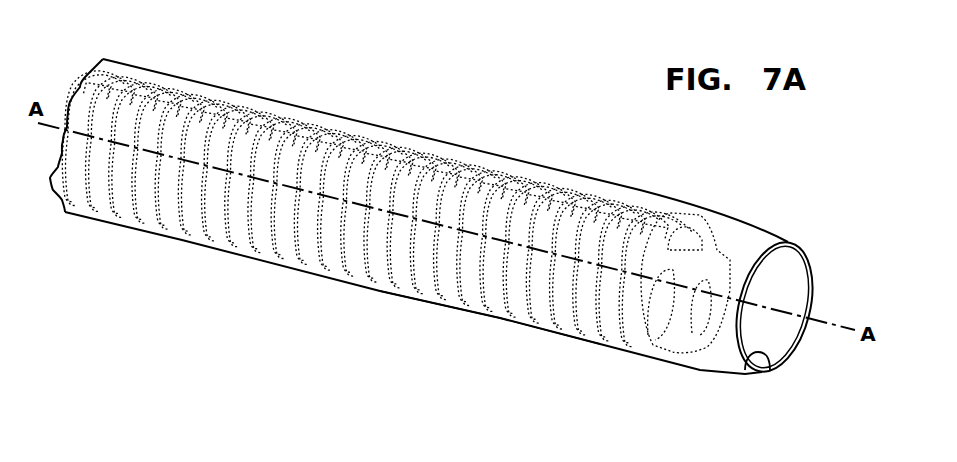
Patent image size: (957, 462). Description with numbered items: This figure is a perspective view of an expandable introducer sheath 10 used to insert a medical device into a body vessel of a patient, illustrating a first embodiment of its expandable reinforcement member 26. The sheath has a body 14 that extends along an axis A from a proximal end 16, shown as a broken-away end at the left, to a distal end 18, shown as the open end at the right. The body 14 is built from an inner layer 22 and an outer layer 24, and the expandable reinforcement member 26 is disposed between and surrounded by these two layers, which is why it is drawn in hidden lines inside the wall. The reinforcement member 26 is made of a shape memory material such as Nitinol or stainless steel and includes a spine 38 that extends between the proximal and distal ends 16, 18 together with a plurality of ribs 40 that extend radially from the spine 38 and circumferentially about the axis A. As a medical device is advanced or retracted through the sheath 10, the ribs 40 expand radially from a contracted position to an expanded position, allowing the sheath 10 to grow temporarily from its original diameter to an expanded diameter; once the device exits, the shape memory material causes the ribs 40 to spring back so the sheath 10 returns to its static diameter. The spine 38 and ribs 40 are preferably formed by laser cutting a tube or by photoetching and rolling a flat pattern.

The expandable introducer sheath 10 is at (500, 117).
The body 14 is at (334, 116).
The proximal end 16 is at (72, 95).
The distal end 18 is at (807, 267).
The inner layer 22 is at (773, 372).
The outer layer 24 is at (449, 308).
The expandable reinforcement member 26 is at (562, 180).
The spine 38 is at (707, 250).
The ribs 40 is at (173, 237).